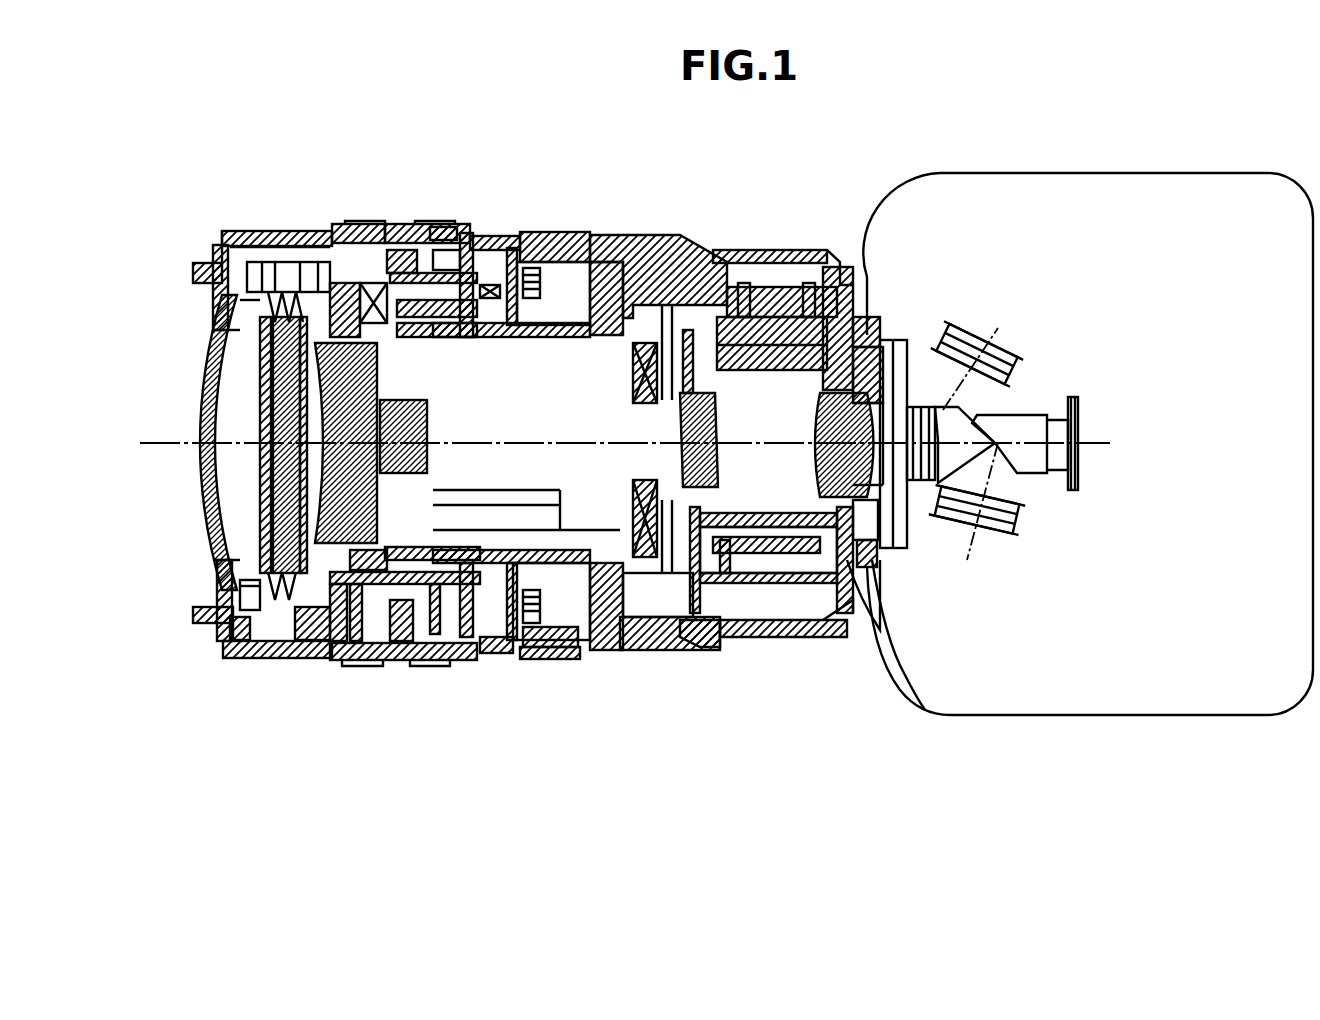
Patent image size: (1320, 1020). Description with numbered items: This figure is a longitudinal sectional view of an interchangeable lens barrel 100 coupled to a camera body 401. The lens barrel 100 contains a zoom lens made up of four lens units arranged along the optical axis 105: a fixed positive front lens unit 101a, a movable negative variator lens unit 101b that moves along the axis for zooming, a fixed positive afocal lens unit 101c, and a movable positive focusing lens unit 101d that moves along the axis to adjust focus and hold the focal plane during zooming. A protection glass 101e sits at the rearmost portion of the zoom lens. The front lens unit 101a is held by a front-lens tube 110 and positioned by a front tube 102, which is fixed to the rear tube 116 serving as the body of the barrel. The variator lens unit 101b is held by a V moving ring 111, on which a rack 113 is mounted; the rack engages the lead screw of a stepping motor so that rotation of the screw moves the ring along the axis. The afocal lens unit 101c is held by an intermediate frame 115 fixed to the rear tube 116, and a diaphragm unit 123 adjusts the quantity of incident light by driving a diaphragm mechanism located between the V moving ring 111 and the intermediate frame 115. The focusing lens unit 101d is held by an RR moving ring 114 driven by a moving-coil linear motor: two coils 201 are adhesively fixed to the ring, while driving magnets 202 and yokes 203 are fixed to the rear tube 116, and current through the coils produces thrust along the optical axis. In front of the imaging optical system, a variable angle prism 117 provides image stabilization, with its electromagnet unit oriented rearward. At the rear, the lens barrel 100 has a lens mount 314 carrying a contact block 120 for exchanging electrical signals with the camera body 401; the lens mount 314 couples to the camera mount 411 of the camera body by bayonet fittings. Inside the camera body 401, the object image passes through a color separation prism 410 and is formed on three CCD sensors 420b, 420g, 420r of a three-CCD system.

The lens barrel 100 is at (373, 683).
The fixed positive lens unit 101a is at (325, 383).
The movable negative lens unit 101b is at (440, 300).
The fixed positive lens unit 101c is at (668, 340).
The movable positive lens unit 101d is at (888, 410).
The protection glass 101e is at (913, 400).
The front tube 102 is at (563, 325).
The optical axis 105 is at (165, 447).
The front-lens tube 110 is at (358, 275).
The variator (V) moving ring 111 is at (412, 245).
The rack member 113 is at (527, 523).
The rear-relay (RR) moving ring 114 is at (845, 290).
The intermediate frame 115 is at (695, 560).
The rear tube 116 is at (712, 262).
The variable angle prism 117 is at (262, 478).
The contact block 120 is at (848, 583).
The diaphragm unit 123 is at (612, 338).
The coils 201 is at (772, 585).
The driving magnets 202 is at (793, 290).
The yokes 203 is at (755, 295).
The lens mount 314 is at (862, 562).
The camera body 401 is at (1152, 680).
The 3P (color separation) prism 410 is at (1012, 470).
The camera mount 411 is at (915, 703).
The CCD sensor 420g is at (993, 378).
The CCD sensor 420b is at (993, 485).
The CCD sensor 420r is at (1083, 418).